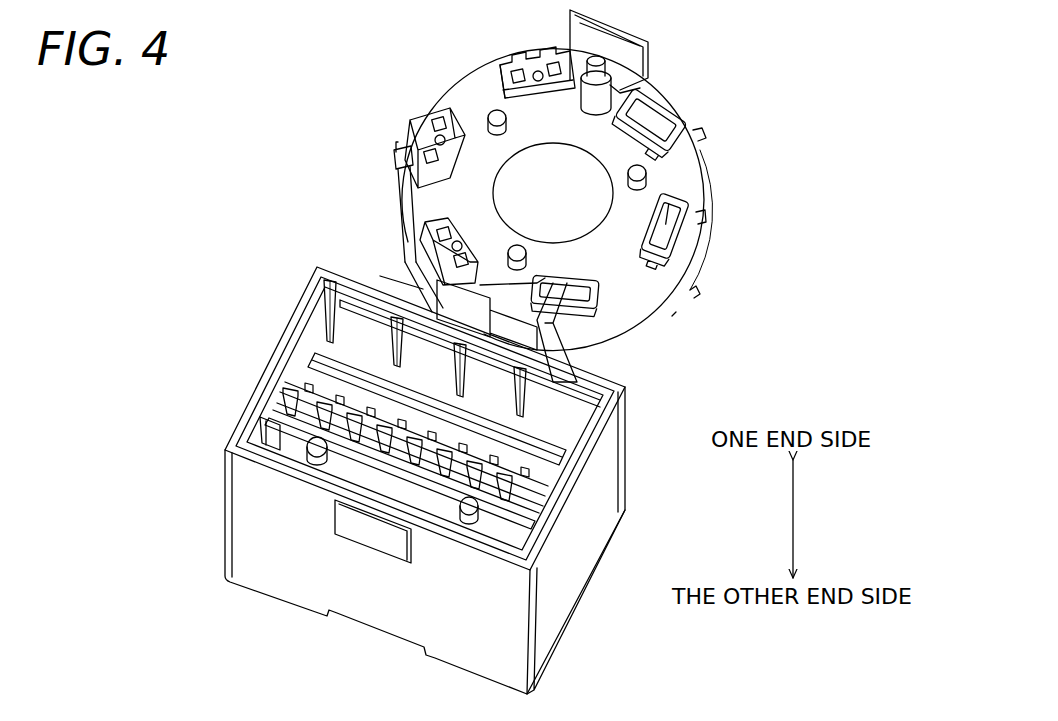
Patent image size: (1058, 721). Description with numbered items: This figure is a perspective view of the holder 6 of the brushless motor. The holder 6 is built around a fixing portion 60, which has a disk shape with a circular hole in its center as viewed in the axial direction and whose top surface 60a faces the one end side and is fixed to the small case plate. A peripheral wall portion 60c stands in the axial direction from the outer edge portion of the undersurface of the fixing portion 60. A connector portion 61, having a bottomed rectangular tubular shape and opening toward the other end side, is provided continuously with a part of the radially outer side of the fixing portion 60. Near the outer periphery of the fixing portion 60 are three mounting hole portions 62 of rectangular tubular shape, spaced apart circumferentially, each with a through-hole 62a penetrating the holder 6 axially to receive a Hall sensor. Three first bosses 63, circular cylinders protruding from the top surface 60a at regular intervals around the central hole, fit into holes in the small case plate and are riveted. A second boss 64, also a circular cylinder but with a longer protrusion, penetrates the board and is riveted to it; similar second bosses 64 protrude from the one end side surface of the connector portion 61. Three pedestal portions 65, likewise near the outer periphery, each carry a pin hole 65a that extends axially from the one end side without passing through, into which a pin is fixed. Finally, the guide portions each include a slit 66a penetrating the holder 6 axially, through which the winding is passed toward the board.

The holder 6 is at (273, 80).
The fixing portion 60 is at (462, 72).
The top surface 60a is at (576, 133).
The peripheral wall portion 60c is at (664, 302).
The connector portion 61 is at (288, 330).
The mounting hole portion 62 is at (663, 112).
The through-hole 62a is at (690, 236).
The first boss 63 is at (488, 120).
The second boss 64 is at (606, 62).
The pedestal portion 65 is at (517, 57).
The pin hole 65a is at (538, 61).
The slit 66a is at (410, 132).